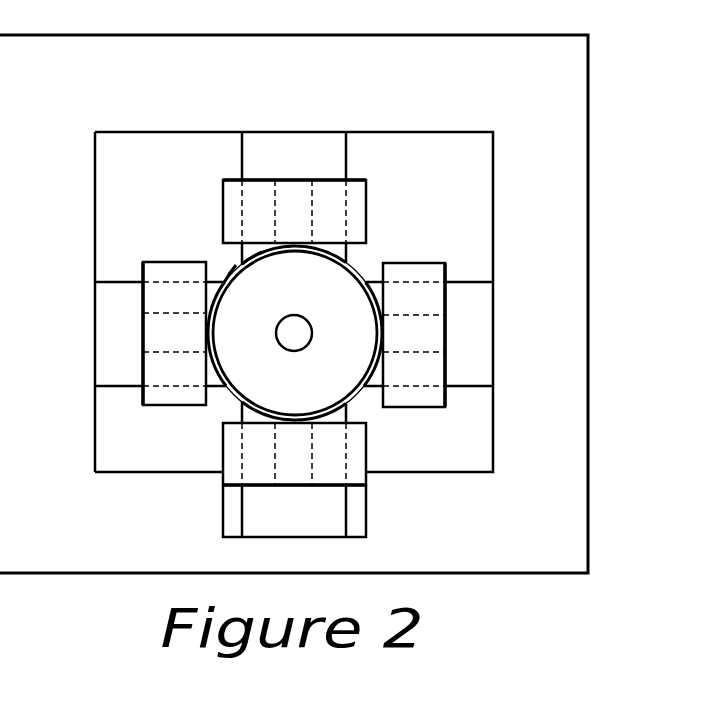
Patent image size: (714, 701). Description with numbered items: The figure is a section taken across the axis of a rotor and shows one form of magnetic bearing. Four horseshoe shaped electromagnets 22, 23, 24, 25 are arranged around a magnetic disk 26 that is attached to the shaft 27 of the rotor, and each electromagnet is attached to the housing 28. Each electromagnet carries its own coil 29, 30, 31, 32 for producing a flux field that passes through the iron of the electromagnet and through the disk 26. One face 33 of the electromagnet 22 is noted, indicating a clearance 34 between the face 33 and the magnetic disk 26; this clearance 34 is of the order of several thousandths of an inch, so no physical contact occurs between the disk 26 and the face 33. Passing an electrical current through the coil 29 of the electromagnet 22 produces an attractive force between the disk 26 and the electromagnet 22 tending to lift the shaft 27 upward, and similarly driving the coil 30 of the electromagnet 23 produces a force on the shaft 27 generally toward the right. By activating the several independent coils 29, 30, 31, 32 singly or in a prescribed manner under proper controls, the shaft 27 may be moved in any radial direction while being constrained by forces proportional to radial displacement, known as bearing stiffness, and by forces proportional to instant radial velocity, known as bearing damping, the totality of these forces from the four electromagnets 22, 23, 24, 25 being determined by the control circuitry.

The electromagnet 22 is at (290, 193).
The electromagnet 23 is at (425, 335).
The electromagnet 24 is at (325, 475).
The electromagnet 25 is at (160, 333).
The disk 26 is at (318, 298).
The shaft 27 is at (302, 351).
The housing 28 is at (553, 193).
The coil 29 is at (222, 212).
The coil 30 is at (425, 408).
The coil 31 is at (233, 457).
The coil 32 is at (165, 405).
The face 33 is at (242, 262).
The clearance 34 is at (225, 282).